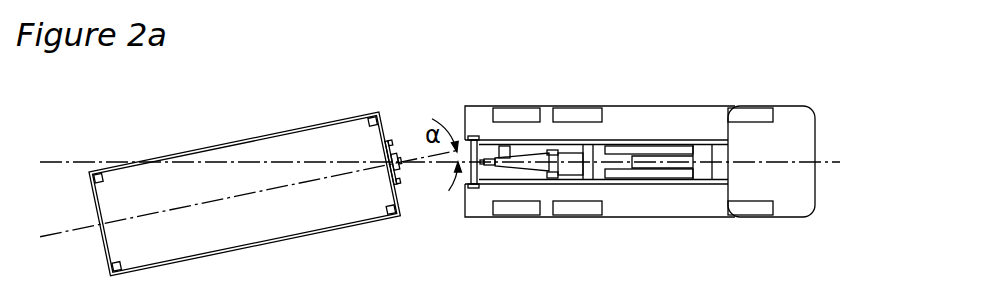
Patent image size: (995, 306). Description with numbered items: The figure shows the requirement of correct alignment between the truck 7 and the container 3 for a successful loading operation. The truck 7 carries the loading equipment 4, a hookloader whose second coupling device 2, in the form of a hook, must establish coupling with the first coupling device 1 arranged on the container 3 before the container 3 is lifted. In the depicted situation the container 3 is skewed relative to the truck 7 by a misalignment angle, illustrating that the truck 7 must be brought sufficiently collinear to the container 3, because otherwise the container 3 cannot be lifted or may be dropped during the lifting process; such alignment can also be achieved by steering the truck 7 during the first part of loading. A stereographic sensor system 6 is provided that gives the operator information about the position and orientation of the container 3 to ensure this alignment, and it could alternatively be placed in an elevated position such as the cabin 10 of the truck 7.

The first coupling device 1 is at (403, 168).
The second coupling device 2 is at (484, 164).
The container 3 is at (232, 182).
The loading equipment 4 is at (650, 183).
The stereographic sensor system 6 is at (506, 147).
The truck 7 is at (637, 124).
The cabin 10 is at (781, 174).